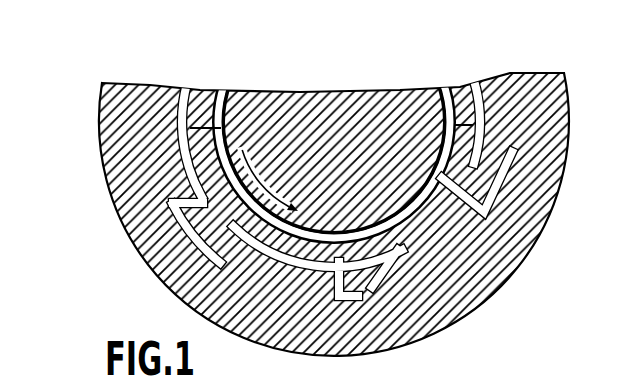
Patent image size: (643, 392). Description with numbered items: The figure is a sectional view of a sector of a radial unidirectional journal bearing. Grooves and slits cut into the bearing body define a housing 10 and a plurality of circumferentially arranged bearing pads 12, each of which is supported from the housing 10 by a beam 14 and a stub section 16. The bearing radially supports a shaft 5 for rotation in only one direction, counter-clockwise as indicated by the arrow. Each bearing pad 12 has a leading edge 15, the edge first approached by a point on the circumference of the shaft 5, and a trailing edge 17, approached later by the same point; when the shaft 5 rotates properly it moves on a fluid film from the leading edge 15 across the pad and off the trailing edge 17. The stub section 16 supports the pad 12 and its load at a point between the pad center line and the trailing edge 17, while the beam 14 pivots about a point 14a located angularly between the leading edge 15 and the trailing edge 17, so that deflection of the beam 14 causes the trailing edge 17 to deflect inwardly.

The shaft 5 is at (340, 112).
The housing 10 is at (535, 185).
The bearing pad 12 is at (420, 164).
The beam 14 is at (370, 287).
The pivot point 14a is at (412, 258).
The leading edge 15 is at (392, 184).
The stub section 16 is at (292, 320).
The trailing edge 17 is at (455, 95).